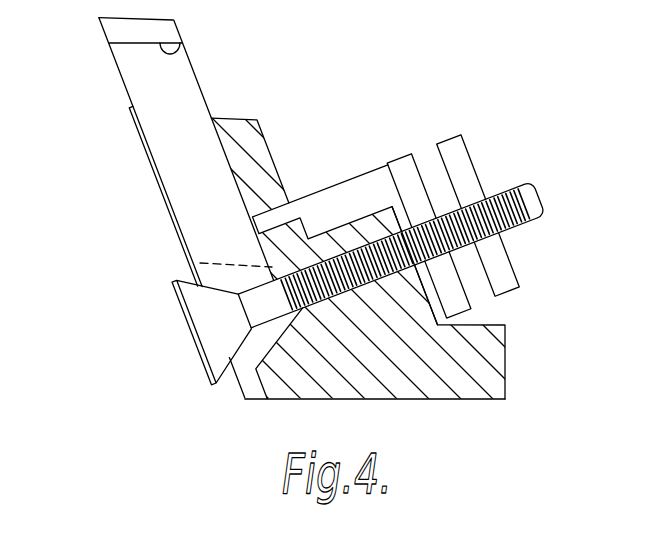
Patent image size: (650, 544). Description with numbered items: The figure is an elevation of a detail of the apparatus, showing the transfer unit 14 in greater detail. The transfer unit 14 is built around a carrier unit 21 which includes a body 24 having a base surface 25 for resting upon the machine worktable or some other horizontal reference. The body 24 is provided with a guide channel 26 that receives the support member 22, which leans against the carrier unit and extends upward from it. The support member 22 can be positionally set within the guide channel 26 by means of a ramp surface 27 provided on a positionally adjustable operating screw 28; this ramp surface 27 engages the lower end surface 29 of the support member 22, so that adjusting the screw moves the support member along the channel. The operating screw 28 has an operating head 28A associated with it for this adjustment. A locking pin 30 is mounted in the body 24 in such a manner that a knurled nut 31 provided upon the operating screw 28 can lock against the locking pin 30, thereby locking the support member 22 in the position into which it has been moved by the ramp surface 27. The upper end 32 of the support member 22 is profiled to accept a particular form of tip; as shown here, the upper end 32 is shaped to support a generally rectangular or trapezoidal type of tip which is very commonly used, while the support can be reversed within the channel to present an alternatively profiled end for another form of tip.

The transfer unit 14 is at (165, 329).
The carrier unit 21 is at (412, 367).
The support member 22 is at (130, 78).
The body 24 is at (250, 385).
The base surface 25 is at (320, 400).
The guide channel 26 is at (157, 147).
The ramp surface 27 is at (178, 282).
The operating screw 28 is at (517, 185).
The operating head 28A is at (513, 280).
The lower end surface 29 is at (230, 270).
The locking pin 30 is at (317, 195).
The knurled nut 31 is at (400, 163).
The upper end 32 is at (185, 58).